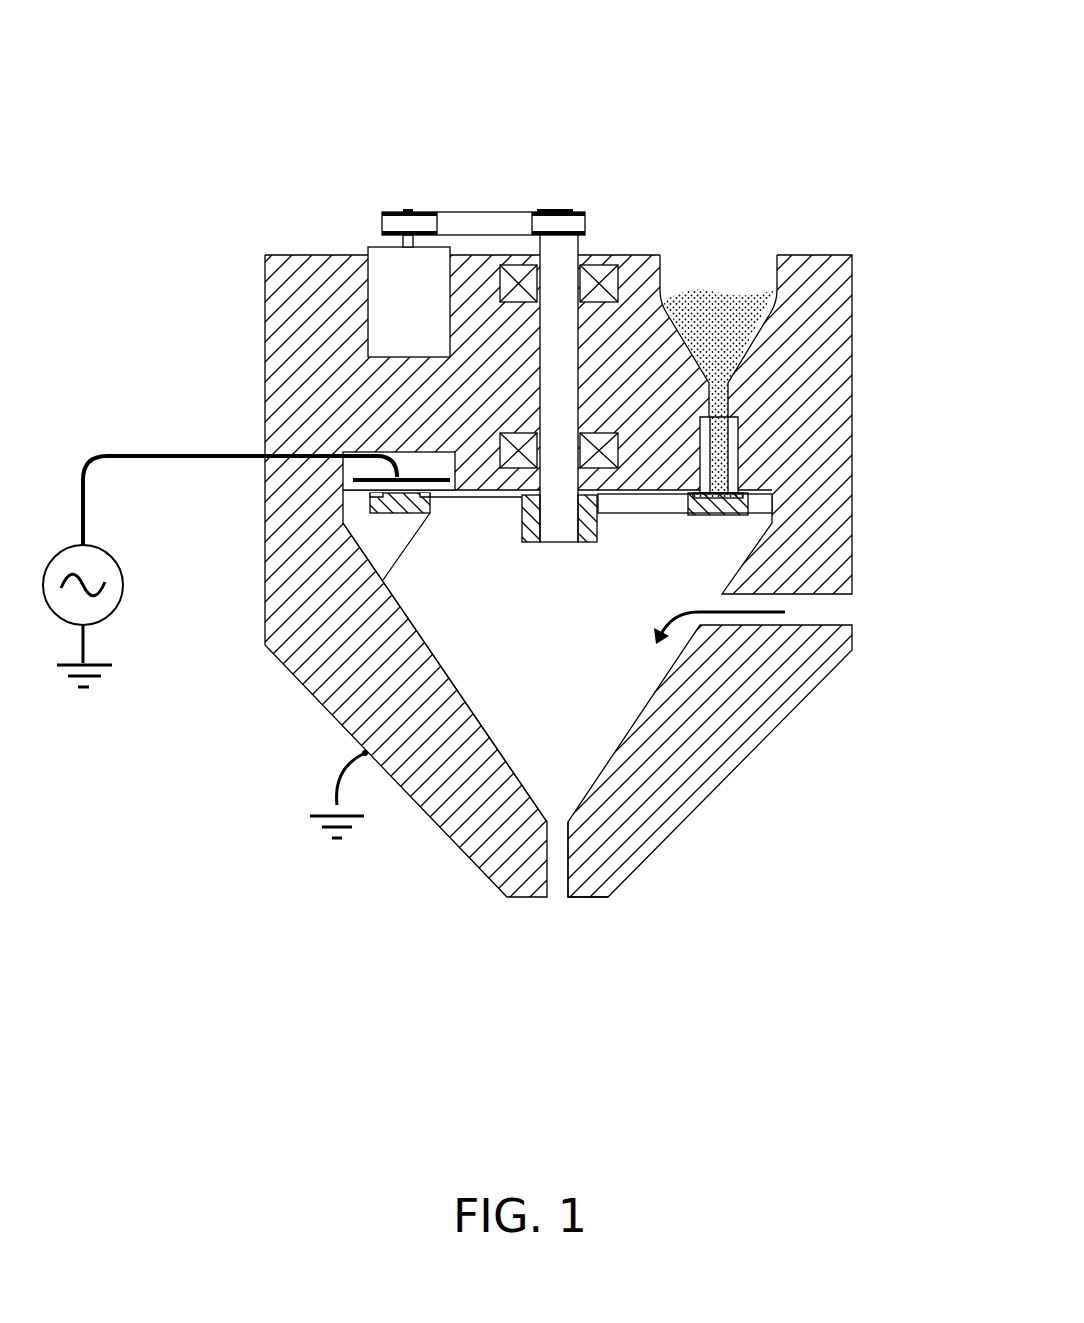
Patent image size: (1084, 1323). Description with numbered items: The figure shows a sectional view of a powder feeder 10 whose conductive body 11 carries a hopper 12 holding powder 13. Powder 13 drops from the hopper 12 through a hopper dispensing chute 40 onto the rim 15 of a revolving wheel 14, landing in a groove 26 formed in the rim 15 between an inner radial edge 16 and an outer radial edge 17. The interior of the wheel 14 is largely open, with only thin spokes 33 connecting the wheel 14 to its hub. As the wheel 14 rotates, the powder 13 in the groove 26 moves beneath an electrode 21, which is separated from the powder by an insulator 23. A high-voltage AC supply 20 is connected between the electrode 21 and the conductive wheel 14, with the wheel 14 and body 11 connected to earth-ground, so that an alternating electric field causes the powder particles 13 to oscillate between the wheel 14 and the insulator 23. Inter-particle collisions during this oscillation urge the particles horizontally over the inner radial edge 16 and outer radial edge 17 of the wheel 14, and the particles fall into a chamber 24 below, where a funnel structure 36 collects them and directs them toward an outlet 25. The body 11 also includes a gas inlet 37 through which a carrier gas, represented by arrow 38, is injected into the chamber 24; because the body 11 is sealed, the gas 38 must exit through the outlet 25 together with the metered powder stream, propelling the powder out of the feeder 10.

The powder feeder 10 is at (677, 103).
The body 11 is at (850, 270).
The hopper 12 is at (658, 275).
The powder 13 is at (712, 303).
The wheel 14 is at (680, 515).
The rim 15 is at (747, 498).
The inner radial edge 16 is at (383, 585).
The outer radial edge 17 is at (372, 500).
The AC supply 20 is at (115, 605).
The electrode 21 is at (373, 478).
The insulator 23 is at (355, 483).
The chamber 24 is at (528, 688).
The outlet 25 is at (570, 847).
The groove 26 is at (422, 502).
The spokes 33 is at (633, 503).
The funnel structure 36 is at (622, 738).
The gas inlet 37 is at (833, 610).
The carrier gas 38 is at (738, 612).
The hopper dispensing chute 40 is at (730, 478).